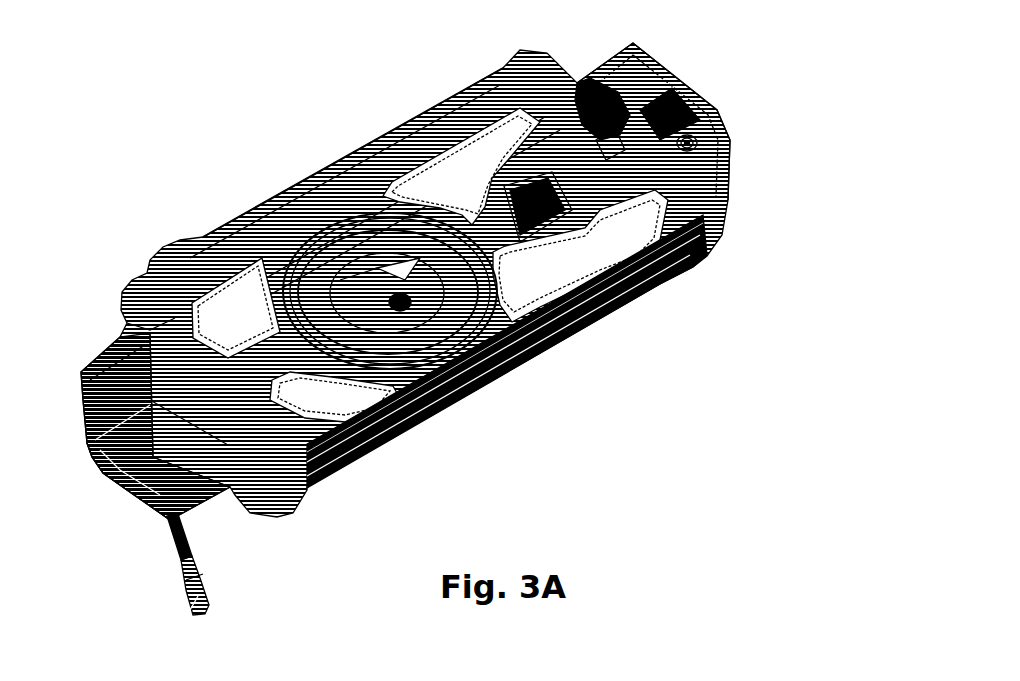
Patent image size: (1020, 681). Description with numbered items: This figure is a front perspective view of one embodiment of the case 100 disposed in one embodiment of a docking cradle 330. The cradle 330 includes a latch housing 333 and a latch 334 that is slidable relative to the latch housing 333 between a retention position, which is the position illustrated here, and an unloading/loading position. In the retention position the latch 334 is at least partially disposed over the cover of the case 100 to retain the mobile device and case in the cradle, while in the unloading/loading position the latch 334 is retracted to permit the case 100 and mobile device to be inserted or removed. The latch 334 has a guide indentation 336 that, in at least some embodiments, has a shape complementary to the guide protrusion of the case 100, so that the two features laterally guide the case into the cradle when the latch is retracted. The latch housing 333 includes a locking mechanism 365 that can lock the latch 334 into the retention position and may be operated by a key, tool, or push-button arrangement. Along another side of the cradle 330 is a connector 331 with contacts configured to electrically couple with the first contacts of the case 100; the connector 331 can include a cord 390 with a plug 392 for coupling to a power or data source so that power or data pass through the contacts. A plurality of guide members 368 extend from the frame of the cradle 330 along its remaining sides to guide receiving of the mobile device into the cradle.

The case 100 is at (293, 190).
The cradle 330 is at (93, 362).
The connector 331 is at (110, 470).
The latch housing 333 is at (630, 62).
The latch 334 is at (587, 90).
The guide indentation 336 is at (613, 134).
The locking mechanism 365 is at (697, 143).
The guide members 368 is at (375, 453).
The cord 390 is at (173, 540).
The plug 392 is at (207, 603).